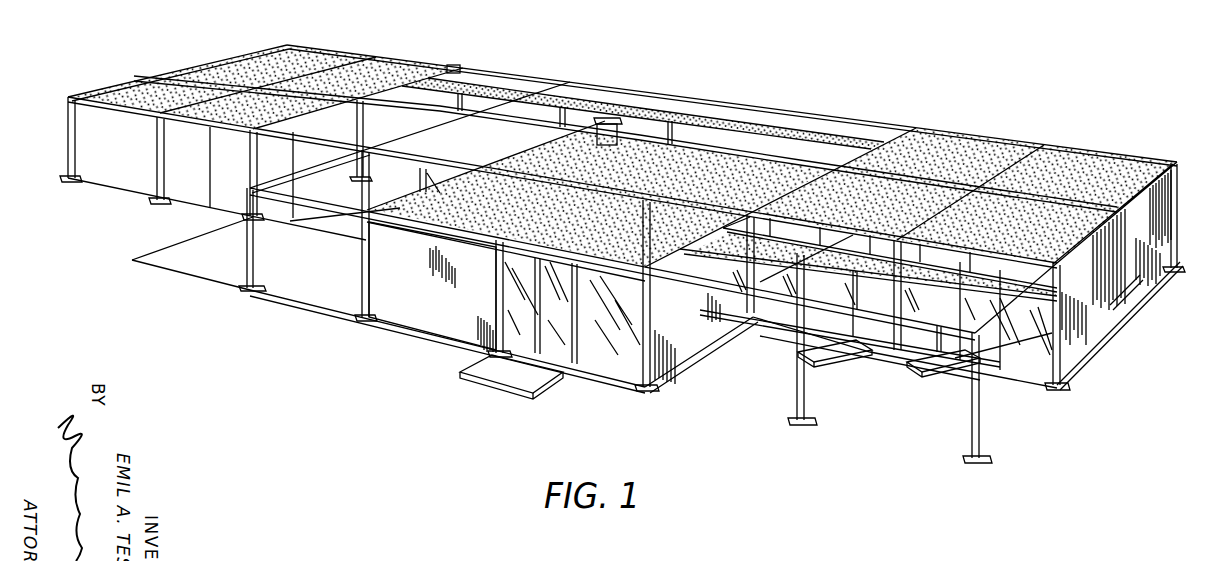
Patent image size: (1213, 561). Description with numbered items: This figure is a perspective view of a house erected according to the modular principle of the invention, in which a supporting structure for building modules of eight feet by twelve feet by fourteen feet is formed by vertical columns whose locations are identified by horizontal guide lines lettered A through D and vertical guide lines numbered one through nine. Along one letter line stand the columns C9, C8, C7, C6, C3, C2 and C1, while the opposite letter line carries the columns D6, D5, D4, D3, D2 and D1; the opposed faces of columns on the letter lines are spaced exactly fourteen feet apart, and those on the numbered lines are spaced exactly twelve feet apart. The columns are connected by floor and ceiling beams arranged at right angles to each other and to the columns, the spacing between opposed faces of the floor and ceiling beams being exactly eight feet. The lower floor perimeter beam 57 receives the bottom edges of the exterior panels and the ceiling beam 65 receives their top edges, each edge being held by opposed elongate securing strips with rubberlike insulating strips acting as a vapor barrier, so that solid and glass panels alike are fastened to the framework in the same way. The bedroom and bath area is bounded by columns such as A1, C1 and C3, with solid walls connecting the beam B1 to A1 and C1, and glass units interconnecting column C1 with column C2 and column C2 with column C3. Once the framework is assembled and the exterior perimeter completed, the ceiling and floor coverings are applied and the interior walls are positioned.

The column C9 is at (66, 172).
The column C8 is at (156, 188).
The column C7 is at (248, 180).
The column C6 is at (366, 200).
The column D6 is at (248, 285).
The column D5 is at (360, 308).
The column D4 is at (496, 335).
The column D3 is at (642, 372).
The column D2 is at (806, 396).
The column D1 is at (982, 430).
The column C3 is at (772, 318).
The column C2 is at (894, 348).
The column C1 is at (1062, 358).
The ceiling beam 65 is at (445, 232).
The floor perimeter beam 57 is at (1014, 372).
The column A1 is at (1180, 250).
The beam B1 is at (1128, 300).